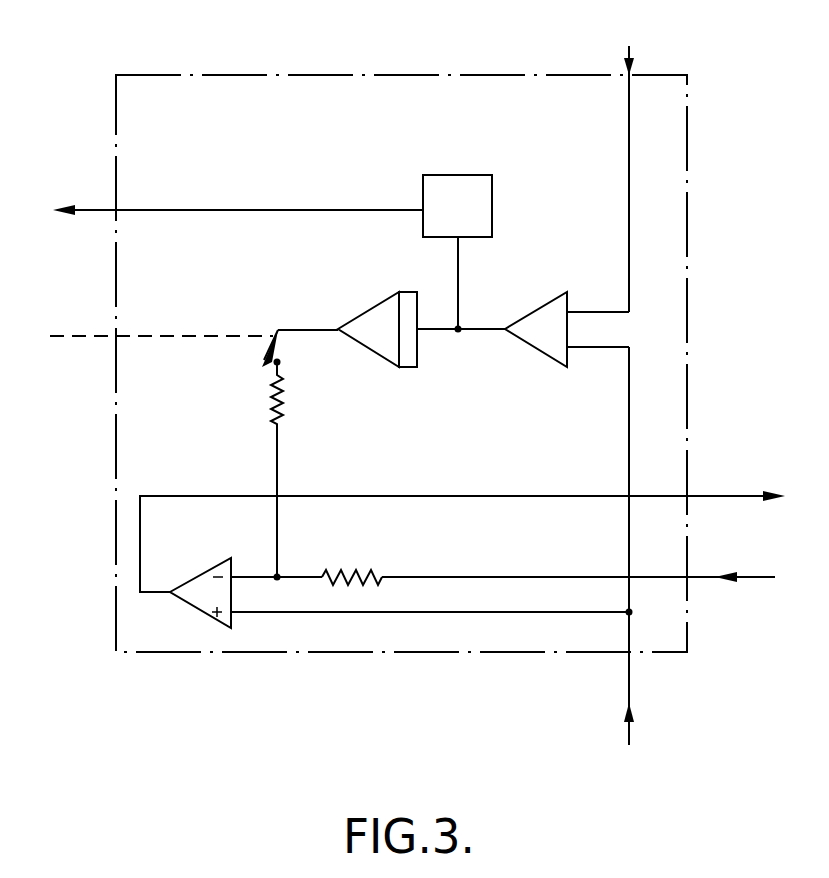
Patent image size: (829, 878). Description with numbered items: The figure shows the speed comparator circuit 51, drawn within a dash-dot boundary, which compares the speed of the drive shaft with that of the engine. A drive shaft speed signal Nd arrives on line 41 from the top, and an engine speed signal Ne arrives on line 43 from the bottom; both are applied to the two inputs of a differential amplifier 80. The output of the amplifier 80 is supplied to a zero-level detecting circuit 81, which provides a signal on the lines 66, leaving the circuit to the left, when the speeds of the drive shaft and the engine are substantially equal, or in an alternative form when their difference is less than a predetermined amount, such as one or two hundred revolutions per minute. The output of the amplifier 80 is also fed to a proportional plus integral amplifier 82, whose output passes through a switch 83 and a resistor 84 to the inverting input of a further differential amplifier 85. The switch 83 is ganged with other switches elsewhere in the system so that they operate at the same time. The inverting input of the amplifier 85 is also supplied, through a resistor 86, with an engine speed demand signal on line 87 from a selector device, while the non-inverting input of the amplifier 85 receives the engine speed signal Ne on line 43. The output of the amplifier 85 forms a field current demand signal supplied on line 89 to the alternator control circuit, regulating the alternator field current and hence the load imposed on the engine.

The line 41 is at (629, 126).
The line 43 is at (628, 672).
The circuit 51 is at (176, 640).
The lines 66 is at (96, 208).
The differential amplifier 80 is at (548, 328).
The zero-level detecting circuit 81 is at (463, 198).
The proportional plus integral amplifier 82 is at (375, 325).
The switch 83 is at (273, 330).
The resistor 84 is at (280, 386).
The further differential amplifier 85 is at (210, 587).
The resistor 86 is at (365, 575).
The line 87 is at (697, 577).
The line 89 is at (730, 493).